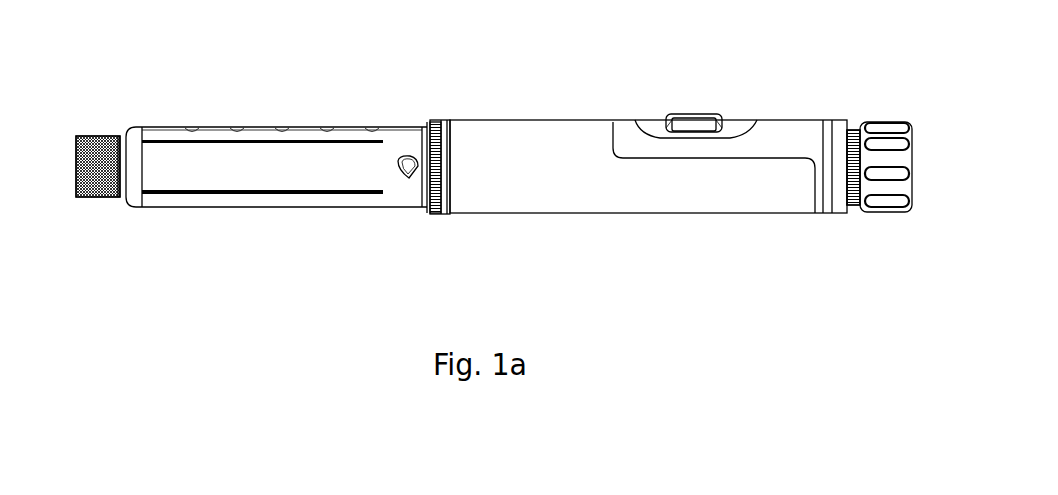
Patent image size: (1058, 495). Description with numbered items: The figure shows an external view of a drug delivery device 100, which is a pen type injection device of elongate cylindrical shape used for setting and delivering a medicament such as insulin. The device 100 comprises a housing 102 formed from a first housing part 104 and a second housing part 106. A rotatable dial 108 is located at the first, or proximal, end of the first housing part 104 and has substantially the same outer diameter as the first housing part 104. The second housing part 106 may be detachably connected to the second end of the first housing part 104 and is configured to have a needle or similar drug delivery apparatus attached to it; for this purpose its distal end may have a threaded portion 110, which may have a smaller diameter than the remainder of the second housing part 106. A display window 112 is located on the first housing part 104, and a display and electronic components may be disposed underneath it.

The drug delivery device 100 is at (687, 309).
The housing 102 is at (448, 130).
The first housing part 104 is at (777, 152).
The second housing part 106 is at (302, 198).
The rotatable dial 108 is at (878, 205).
The threaded portion 110 is at (108, 190).
The display window 112 is at (693, 130).